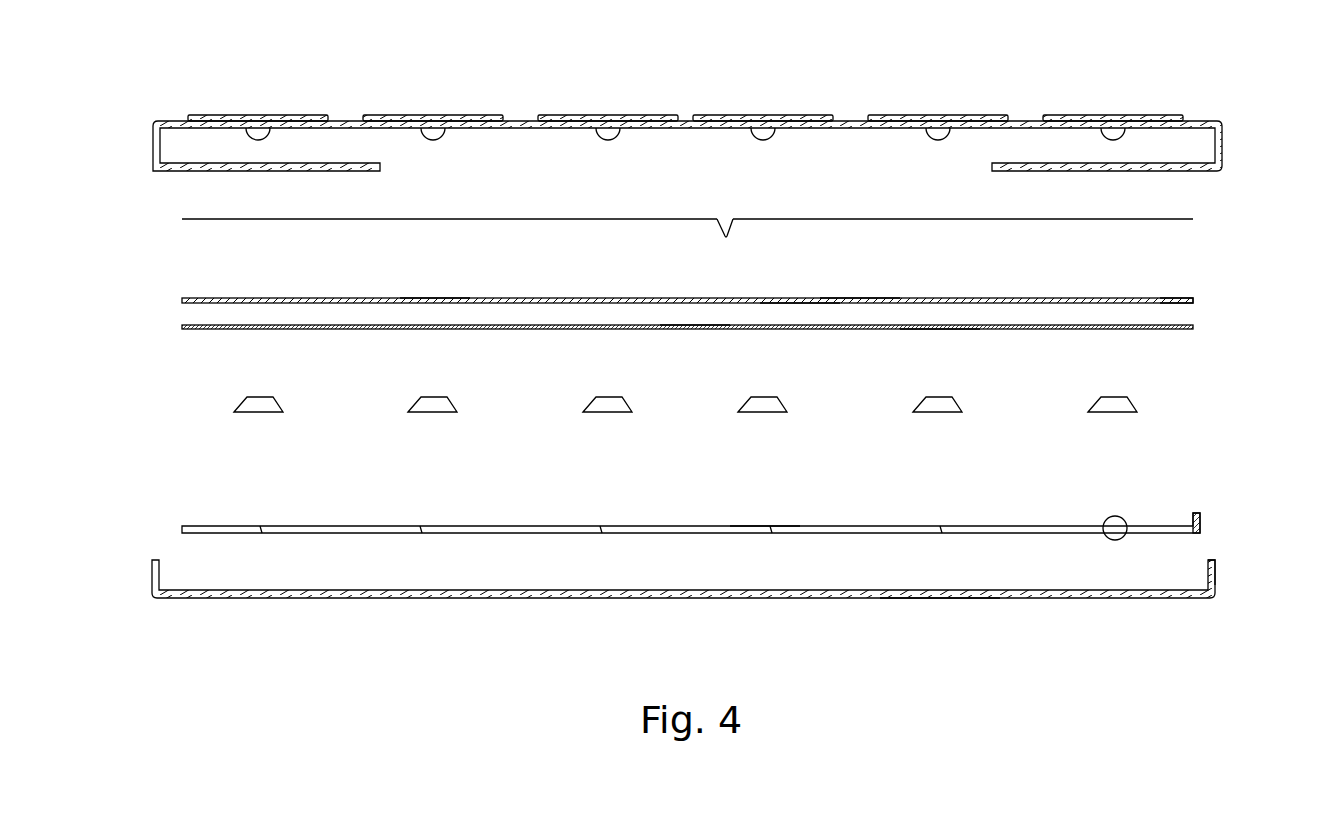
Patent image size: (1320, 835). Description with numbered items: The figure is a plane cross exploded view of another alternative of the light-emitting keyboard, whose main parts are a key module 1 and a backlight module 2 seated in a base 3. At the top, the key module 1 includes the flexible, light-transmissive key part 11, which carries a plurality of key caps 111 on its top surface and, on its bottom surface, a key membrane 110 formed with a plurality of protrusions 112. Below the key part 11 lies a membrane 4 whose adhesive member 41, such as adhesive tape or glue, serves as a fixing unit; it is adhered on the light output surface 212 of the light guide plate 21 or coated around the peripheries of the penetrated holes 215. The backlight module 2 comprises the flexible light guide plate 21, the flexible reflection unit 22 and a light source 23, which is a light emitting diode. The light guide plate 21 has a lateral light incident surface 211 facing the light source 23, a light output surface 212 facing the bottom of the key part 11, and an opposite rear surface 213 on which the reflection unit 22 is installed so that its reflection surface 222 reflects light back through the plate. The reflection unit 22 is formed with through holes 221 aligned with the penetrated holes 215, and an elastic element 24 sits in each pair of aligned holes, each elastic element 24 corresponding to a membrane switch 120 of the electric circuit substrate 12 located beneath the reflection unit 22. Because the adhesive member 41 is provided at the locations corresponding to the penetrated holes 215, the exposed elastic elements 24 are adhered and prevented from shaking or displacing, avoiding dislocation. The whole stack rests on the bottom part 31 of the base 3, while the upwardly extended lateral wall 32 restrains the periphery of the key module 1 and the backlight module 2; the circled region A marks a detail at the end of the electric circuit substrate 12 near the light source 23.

The key module 1 is at (176, 511).
The key part 11 is at (1080, 105).
The key membrane 110 is at (1197, 120).
The key caps 111 is at (1137, 117).
The protrusions 112 is at (608, 141).
The membrane 4 is at (648, 216).
The adhesive member 41 is at (727, 232).
The backlight module 2 is at (1215, 300).
The light guide plate 21 is at (1058, 297).
The light incident surface 211 is at (1196, 297).
The light output surface 212 is at (858, 297).
The rear surface 213 is at (802, 304).
The penetrated holes 215 is at (435, 297).
The reflection unit 22 is at (846, 330).
The through holes 221 is at (940, 329).
The reflection surface 222 is at (696, 326).
The light source 23 is at (1190, 522).
The elastic element 24 is at (260, 409).
The electric circuit substrate 12 is at (980, 525).
The membrane switch 120 is at (765, 525).
The base 3 is at (1127, 605).
The bottom part 31 is at (948, 598).
The lateral wall 32 is at (1216, 575).
The detail region A is at (1122, 540).